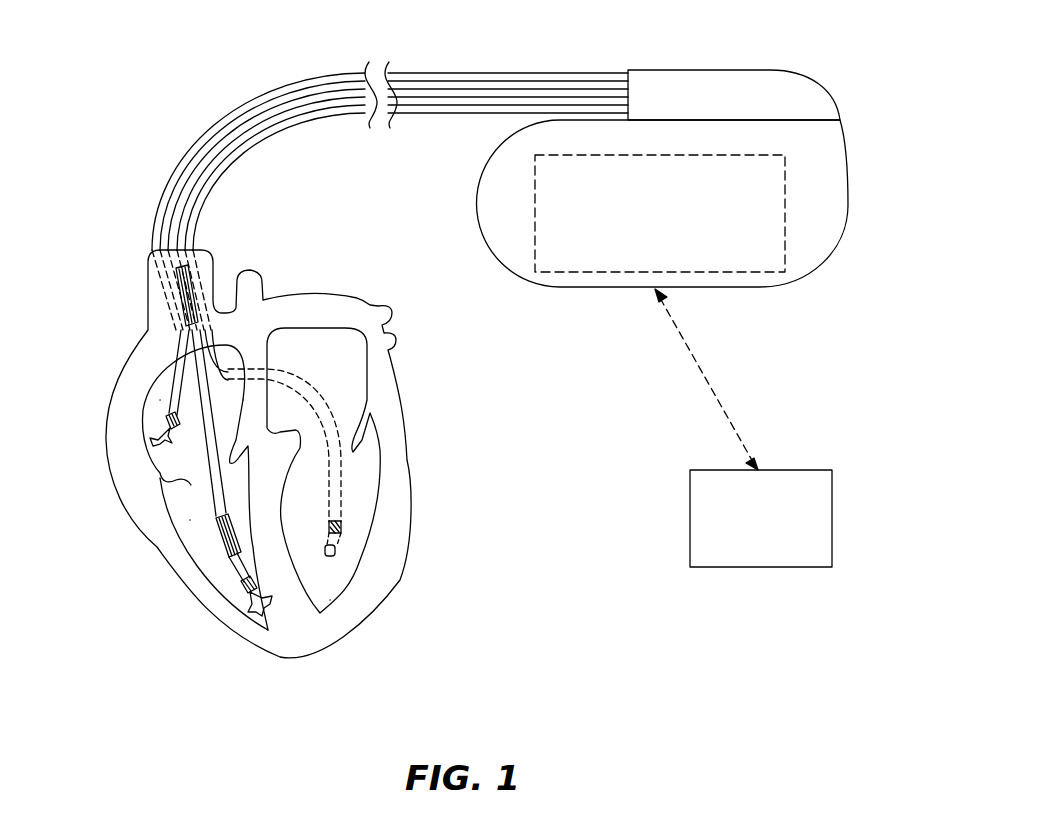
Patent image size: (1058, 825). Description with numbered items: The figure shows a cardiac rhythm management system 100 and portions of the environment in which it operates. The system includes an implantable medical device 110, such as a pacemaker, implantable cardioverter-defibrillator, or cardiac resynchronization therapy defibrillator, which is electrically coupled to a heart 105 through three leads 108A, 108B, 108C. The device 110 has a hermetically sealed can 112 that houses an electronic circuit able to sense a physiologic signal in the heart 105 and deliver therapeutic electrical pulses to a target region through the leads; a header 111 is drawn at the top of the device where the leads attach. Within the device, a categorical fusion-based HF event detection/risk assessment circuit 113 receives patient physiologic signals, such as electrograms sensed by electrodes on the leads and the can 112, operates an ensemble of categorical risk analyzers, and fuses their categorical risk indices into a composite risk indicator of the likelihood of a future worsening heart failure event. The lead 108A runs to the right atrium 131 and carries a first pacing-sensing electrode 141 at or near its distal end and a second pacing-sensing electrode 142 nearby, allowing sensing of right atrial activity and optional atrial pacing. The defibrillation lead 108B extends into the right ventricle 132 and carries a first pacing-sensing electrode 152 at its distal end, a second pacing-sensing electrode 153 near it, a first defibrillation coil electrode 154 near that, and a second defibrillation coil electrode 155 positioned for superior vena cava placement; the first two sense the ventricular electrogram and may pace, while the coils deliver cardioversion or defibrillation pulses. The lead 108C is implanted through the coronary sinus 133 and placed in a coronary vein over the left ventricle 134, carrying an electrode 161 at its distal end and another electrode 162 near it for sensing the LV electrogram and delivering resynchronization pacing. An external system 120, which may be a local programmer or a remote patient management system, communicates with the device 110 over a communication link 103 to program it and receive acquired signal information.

The cardiac rhythm management system 100 is at (128, 34).
The communication link 103 is at (708, 377).
The heart 105 is at (404, 434).
The lead 108A is at (295, 83).
The lead 108B is at (237, 122).
The lead 108C is at (260, 143).
The implantable medical device 110 is at (734, 48).
The header 111 is at (807, 83).
The hermetically sealed can 112 is at (849, 180).
The categorical fusion-based HF event detection/risk assessment circuit 113 is at (658, 155).
The external system 120 is at (833, 517).
The right atrium 131 is at (163, 385).
The right ventricle 132 is at (190, 500).
The coronary sinus 133 is at (223, 365).
The left ventricle 134 is at (333, 585).
The first pacing-sensing electrode 141 is at (150, 450).
The second pacing-sensing electrode 142 is at (158, 418).
The first pacing-sensing electrode 152 is at (255, 615).
The second pacing-sensing electrode 153 is at (243, 587).
The first defibrillation coil electrode 154 is at (223, 547).
The second defibrillation coil electrode 155 is at (170, 297).
The electrode 161 is at (338, 548).
The electrode 162 is at (342, 522).